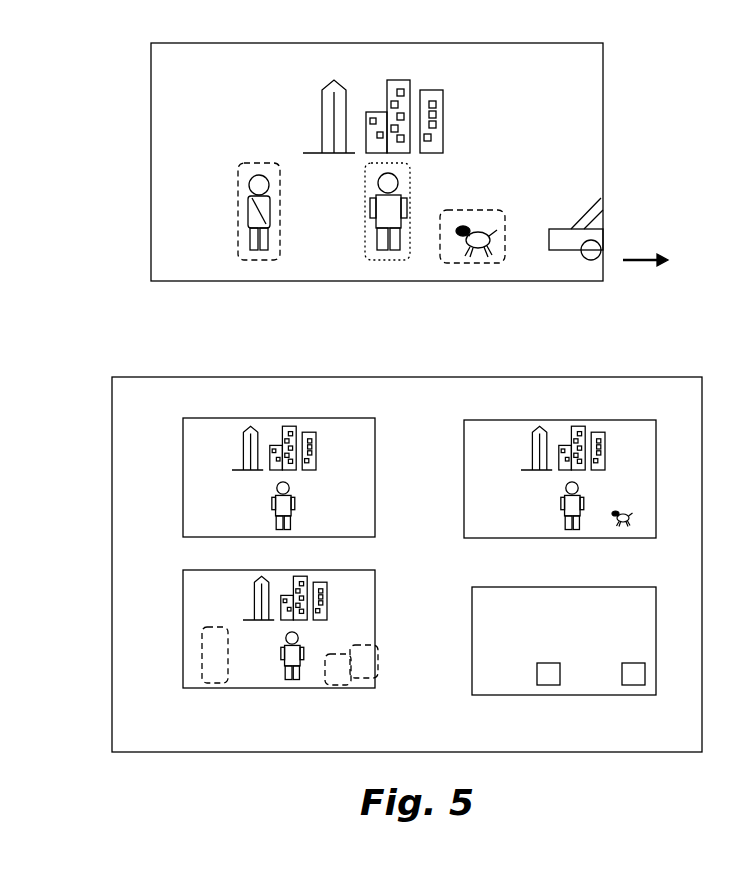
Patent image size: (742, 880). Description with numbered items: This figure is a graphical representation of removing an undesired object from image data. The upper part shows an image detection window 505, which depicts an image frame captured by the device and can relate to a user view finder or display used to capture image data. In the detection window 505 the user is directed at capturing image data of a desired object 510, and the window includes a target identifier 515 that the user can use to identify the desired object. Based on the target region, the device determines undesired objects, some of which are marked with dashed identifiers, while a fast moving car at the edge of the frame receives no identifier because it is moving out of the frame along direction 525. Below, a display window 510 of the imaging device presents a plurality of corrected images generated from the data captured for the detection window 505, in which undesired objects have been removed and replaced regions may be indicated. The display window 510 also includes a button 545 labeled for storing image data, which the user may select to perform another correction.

The image detection window 505 is at (240, 43).
The object 510 is at (398, 186).
The target identifier 515 is at (388, 262).
The direction 525 is at (645, 250).
The button 545 is at (490, 587).